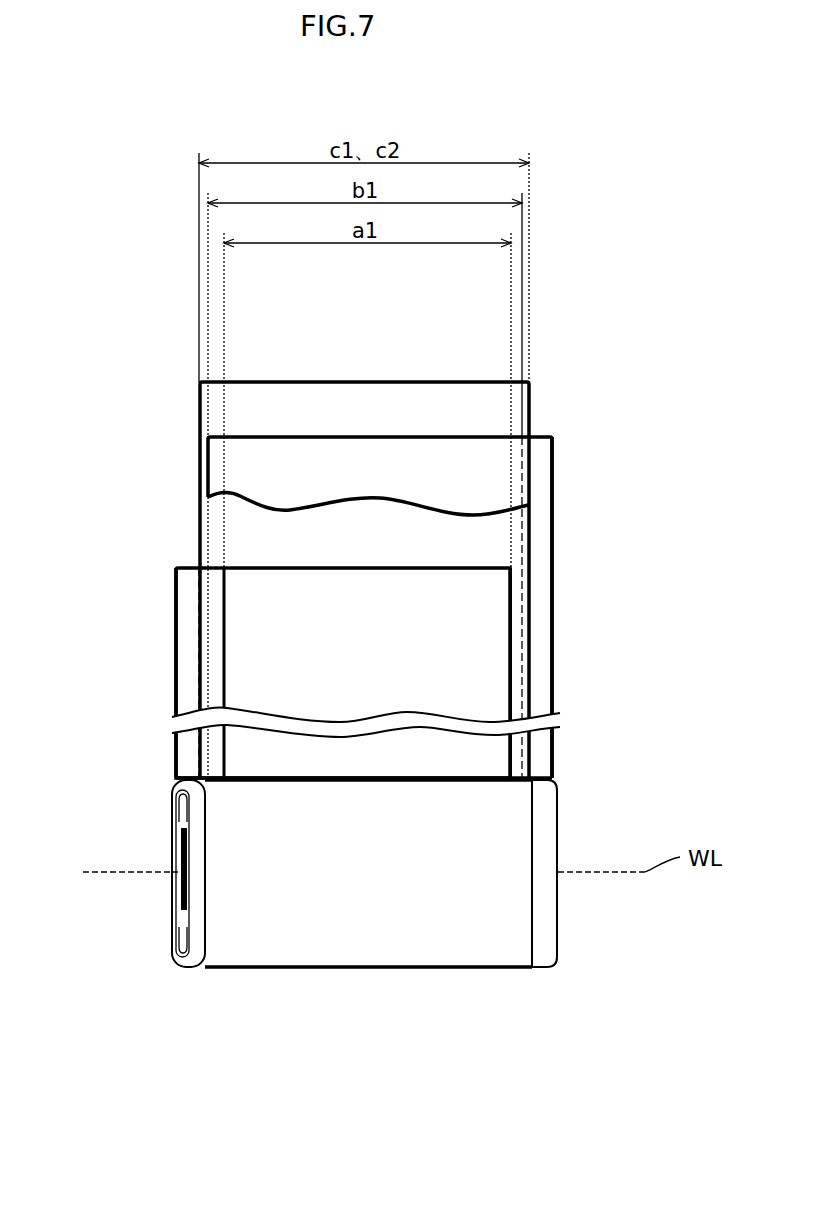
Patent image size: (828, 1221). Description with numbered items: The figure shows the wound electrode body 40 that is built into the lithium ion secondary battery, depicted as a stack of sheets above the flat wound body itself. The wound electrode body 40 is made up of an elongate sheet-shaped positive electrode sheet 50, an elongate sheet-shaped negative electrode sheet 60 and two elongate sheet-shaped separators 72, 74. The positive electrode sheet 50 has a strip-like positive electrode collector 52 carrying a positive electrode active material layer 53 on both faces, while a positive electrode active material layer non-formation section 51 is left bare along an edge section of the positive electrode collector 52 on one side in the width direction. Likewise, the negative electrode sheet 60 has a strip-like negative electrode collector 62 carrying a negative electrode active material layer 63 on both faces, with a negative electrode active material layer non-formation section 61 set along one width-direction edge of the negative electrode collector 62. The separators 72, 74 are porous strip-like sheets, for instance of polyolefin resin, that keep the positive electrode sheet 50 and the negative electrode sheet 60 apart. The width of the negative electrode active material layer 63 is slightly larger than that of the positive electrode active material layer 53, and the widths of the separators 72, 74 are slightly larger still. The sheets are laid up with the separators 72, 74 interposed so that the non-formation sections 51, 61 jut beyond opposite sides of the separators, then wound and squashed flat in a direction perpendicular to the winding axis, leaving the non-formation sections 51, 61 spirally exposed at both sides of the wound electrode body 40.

The wound electrode body 40 is at (400, 942).
The positive electrode sheet 50 is at (175, 622).
The positive electrode active material layer non-formation section 51 is at (192, 680).
The positive electrode collector 52 is at (175, 760).
The positive electrode active material layer 53 is at (257, 667).
The negative electrode sheet 60 is at (558, 447).
The negative electrode active material layer non-formation section 61 is at (538, 488).
The negative electrode collector 62 is at (555, 578).
The negative electrode active material layer 63 is at (455, 455).
The separator 72 is at (217, 408).
The separator 74 is at (216, 541).